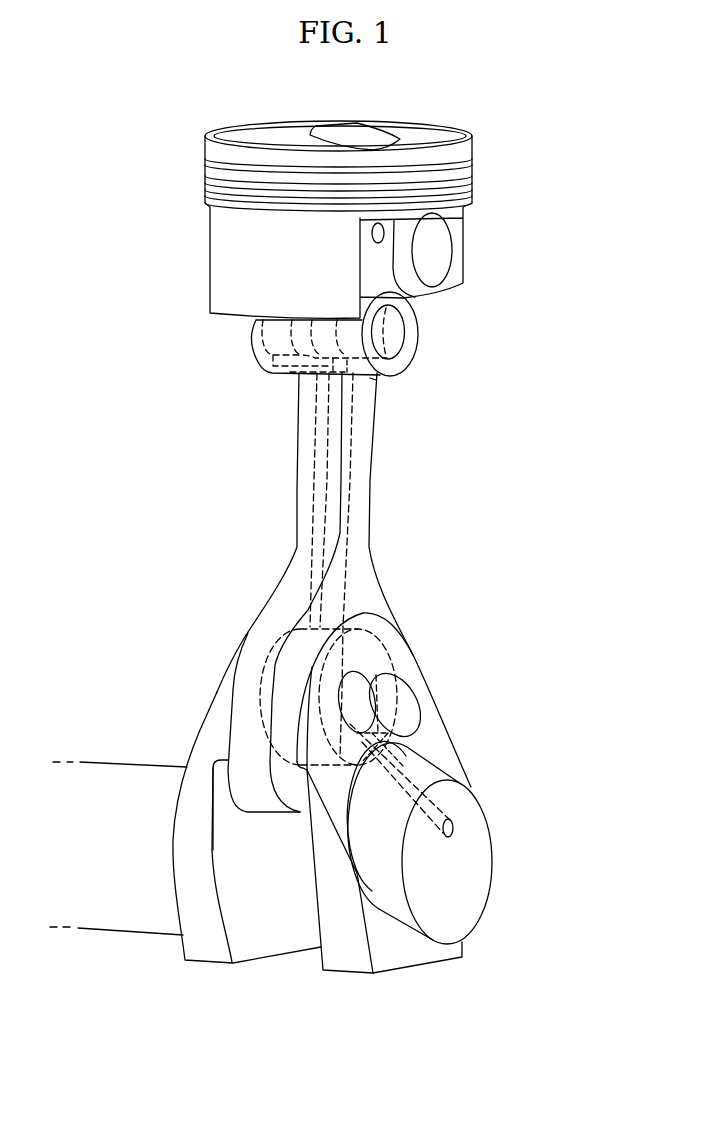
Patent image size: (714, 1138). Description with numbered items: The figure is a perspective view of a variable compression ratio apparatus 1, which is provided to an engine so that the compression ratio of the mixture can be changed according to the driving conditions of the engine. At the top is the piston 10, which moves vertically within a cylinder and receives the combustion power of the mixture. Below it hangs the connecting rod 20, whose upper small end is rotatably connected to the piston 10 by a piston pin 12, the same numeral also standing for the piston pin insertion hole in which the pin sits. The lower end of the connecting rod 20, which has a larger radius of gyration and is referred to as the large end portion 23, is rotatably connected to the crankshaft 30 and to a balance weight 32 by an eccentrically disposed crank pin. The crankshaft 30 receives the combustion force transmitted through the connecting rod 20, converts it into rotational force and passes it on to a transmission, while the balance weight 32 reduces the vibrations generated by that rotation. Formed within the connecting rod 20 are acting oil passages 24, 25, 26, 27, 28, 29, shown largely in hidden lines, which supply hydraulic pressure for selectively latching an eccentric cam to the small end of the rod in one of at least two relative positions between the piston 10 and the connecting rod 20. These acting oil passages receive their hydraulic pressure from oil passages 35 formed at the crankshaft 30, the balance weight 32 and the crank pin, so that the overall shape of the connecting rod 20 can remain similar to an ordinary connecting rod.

The variable compression ratio apparatus 1 is at (541, 136).
The piston 10 is at (207, 145).
The piston pin 12 is at (448, 240).
The connecting rod 20 is at (364, 512).
The large end portion 23 is at (245, 748).
The acting oil passage 24 is at (358, 453).
The acting oil passage 25 is at (368, 385).
The acting oil passage 26 is at (402, 366).
The acting oil passage 27 is at (304, 449).
The acting oil passage 28 is at (286, 370).
The acting oil passage 29 is at (258, 356).
The crankshaft 30 is at (122, 778).
The balance weight 32 is at (415, 678).
The oil passage 35 is at (437, 751).